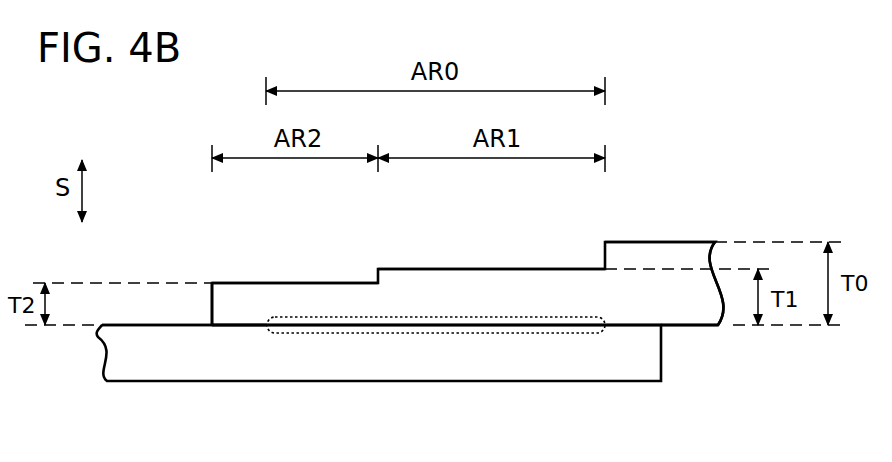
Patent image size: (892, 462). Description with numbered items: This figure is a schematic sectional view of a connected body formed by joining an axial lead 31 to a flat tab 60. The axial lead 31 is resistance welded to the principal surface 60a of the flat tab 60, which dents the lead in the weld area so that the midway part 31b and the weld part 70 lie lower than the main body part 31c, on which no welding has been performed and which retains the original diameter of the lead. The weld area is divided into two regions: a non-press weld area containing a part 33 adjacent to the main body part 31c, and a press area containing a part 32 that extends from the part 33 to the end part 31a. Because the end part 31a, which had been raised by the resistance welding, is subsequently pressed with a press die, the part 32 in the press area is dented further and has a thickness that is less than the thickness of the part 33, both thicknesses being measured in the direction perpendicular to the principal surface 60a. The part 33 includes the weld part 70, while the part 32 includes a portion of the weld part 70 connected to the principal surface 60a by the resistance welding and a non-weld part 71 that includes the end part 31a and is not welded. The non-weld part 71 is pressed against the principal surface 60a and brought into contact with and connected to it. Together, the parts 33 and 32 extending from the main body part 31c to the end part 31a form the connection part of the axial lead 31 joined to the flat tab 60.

The axial lead 31 is at (660, 239).
The end part 31a is at (211, 305).
The midway part 31b is at (373, 307).
The main body part 31c is at (688, 303).
The part in the press area 32 is at (303, 279).
The part in the non-press weld area 33 is at (497, 267).
The flat tab 60 is at (162, 367).
The principal surface 60a is at (153, 326).
The weld part 70 is at (490, 334).
The non-weld part 71 is at (243, 325).